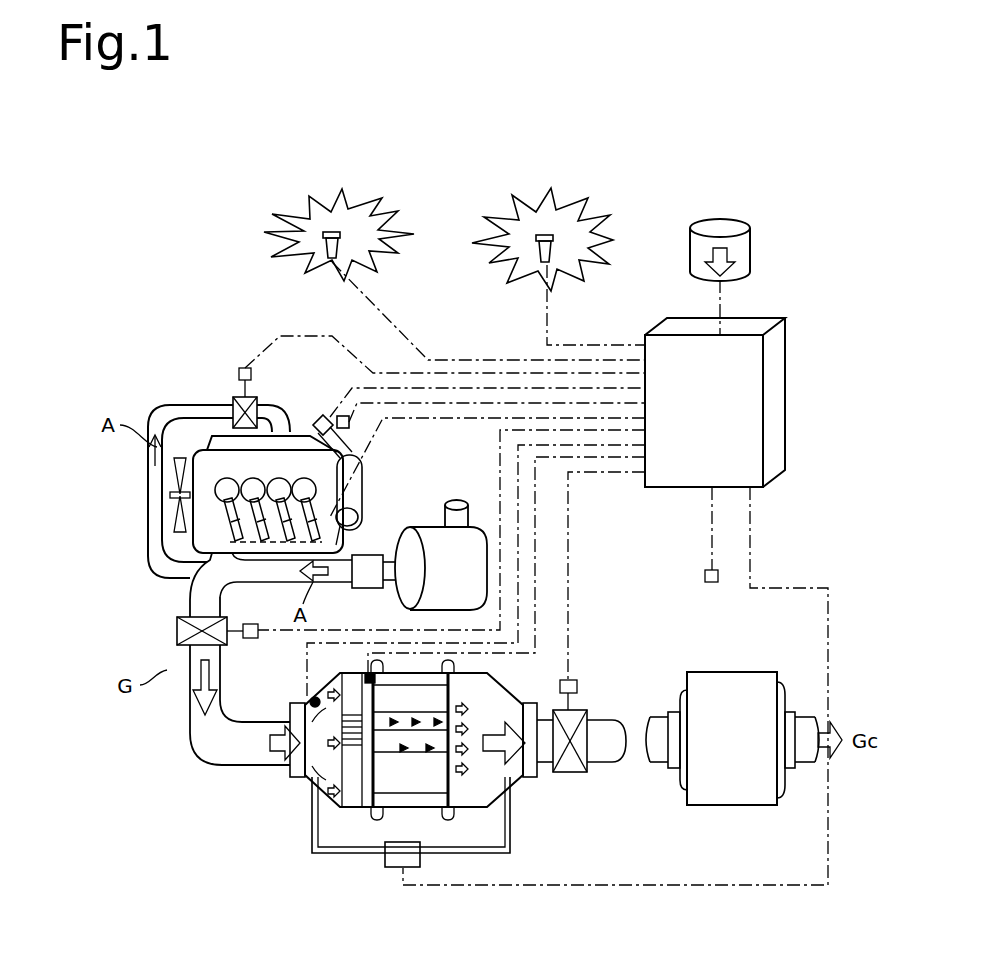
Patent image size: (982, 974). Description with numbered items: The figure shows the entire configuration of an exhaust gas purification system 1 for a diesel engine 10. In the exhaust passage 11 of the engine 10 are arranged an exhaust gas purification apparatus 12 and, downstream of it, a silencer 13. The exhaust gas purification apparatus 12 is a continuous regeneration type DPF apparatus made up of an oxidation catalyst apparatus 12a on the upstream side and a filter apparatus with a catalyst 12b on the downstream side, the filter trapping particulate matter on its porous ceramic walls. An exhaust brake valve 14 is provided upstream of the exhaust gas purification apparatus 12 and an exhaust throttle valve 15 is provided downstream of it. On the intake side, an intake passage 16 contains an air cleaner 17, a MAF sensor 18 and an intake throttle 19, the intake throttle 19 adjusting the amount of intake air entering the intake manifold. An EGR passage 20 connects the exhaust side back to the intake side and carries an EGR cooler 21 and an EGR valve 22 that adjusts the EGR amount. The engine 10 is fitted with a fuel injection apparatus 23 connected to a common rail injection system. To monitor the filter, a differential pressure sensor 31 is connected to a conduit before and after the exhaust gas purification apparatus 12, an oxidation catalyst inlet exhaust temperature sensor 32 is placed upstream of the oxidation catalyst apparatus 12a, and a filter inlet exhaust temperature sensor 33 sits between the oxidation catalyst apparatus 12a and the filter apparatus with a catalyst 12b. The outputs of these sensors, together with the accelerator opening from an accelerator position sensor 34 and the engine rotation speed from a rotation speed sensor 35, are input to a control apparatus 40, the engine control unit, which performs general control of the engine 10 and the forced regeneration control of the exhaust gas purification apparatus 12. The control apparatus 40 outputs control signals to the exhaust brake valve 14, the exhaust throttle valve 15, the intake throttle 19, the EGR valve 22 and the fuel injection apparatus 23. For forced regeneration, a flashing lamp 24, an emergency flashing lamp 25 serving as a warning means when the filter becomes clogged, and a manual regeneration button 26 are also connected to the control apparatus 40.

The exhaust gas purification system 1 is at (660, 242).
The diesel engine 10 is at (215, 452).
The exhaust passage 11 is at (215, 750).
The exhaust gas purification apparatus 12 is at (411, 771).
The oxidation catalyst apparatus 12a is at (352, 780).
The filter apparatus with a catalyst 12b is at (420, 780).
The silencer 13 is at (735, 782).
The exhaust brake valve 14 is at (177, 630).
The exhaust throttle valve 15 is at (583, 712).
The intake passage 16 is at (148, 470).
The air cleaner 17 is at (470, 573).
The MAF sensor 18 is at (365, 555).
The intake throttle 19 is at (243, 394).
The EGR passage 20 is at (365, 447).
The EGR cooler 21 is at (357, 487).
The EGR valve 22 is at (316, 417).
The fuel injection apparatus 23 is at (226, 510).
The flashing lamp 24 is at (331, 232).
The emergency flashing lamp 25 is at (545, 235).
The manual regeneration button 26 is at (737, 228).
The differential pressure sensor 31 is at (398, 867).
The oxidation catalyst inlet exhaust temperature sensor 32 is at (312, 699).
The filter inlet exhaust temperature sensor 33 is at (366, 675).
The accelerator position sensor 34 is at (712, 583).
The rotation speed sensor 35 is at (338, 416).
The control apparatus 40 is at (775, 410).